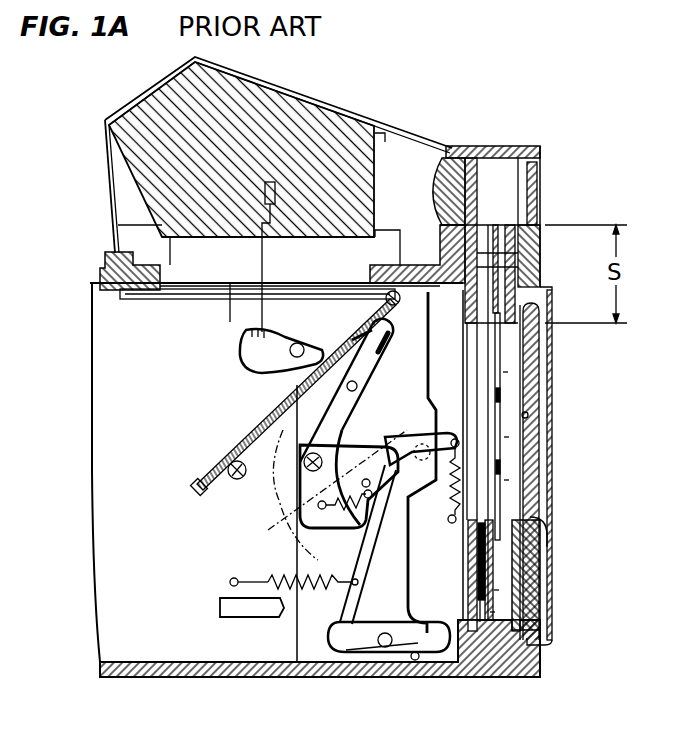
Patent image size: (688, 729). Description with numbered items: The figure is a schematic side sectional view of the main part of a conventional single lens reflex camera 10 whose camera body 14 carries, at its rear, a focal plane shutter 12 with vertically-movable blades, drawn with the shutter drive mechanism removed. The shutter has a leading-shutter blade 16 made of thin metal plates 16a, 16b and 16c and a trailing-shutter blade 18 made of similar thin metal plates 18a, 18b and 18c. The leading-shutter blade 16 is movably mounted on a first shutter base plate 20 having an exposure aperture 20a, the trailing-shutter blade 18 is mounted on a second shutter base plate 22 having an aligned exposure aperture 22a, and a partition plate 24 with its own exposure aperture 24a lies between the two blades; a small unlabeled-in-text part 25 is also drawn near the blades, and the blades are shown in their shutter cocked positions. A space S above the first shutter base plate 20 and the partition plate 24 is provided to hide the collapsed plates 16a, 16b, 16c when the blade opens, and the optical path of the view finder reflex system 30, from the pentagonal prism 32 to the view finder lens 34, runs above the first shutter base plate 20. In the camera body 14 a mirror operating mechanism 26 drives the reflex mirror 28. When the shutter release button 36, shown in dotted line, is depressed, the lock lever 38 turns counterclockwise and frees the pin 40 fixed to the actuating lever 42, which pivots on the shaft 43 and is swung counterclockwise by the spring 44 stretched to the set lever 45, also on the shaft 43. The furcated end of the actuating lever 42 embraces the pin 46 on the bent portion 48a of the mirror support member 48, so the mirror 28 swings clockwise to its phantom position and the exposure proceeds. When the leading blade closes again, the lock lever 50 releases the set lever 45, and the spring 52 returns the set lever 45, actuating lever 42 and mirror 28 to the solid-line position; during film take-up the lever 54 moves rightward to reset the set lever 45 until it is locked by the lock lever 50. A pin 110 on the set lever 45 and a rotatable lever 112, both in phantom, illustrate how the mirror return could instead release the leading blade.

The single lens reflex camera 10 is at (398, 89).
The focal plane shutter 12 is at (463, 571).
The camera body 14 is at (148, 661).
The leading-shutter blade 16 is at (540, 312).
The thin metal plate 16a is at (503, 372).
The thin metal plate 16b is at (504, 437).
The thin metal plate 16c is at (504, 480).
The trailing-shutter blade 18 is at (488, 515).
The thin metal plate 18a is at (482, 625).
The thin metal plate 18b is at (494, 590).
The thin metal plate 18c is at (490, 612).
The first shutter base plate 20 is at (525, 572).
The exposure aperture 20a is at (532, 523).
The second shutter base plate 22 is at (468, 318).
The exposure aperture 22a is at (450, 522).
The partition plate 24 is at (497, 232).
The exposure aperture 24a is at (498, 337).
The pin 25 is at (528, 415).
The mirror operating mechanism 26 is at (300, 516).
The reflex mirror 28 is at (160, 302).
The view finder reflex system 30 is at (377, 153).
The pentagonal prism 32 is at (366, 204).
The view finder lens 34 is at (455, 160).
The shutter release button 36 is at (265, 193).
The lock lever 38 is at (244, 352).
The pin 40 is at (357, 387).
The actuating lever 42 is at (312, 432).
The shaft 43 is at (303, 462).
The spring 44 is at (338, 497).
The set lever 45 is at (362, 570).
The pin 46 is at (388, 348).
The mirror support member 48 is at (232, 480).
The bent portion 48a is at (352, 333).
The lock lever 50 is at (341, 655).
The spring 52 is at (265, 574).
The lever 54 is at (247, 612).
The pin 110 is at (390, 458).
The rotatable lever 112 is at (424, 443).